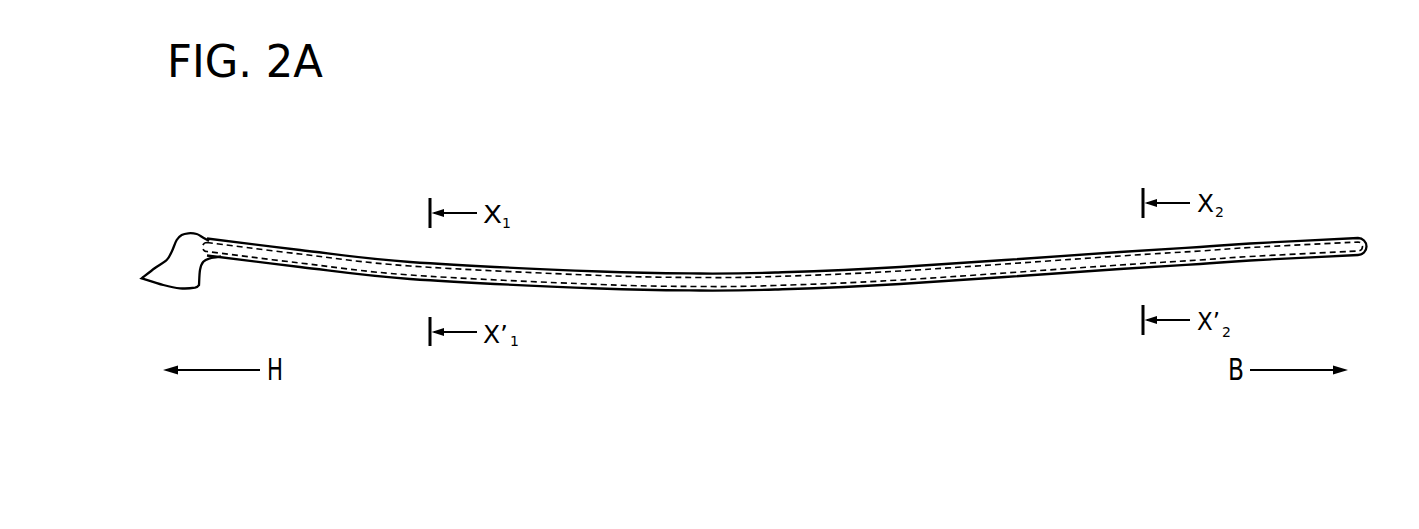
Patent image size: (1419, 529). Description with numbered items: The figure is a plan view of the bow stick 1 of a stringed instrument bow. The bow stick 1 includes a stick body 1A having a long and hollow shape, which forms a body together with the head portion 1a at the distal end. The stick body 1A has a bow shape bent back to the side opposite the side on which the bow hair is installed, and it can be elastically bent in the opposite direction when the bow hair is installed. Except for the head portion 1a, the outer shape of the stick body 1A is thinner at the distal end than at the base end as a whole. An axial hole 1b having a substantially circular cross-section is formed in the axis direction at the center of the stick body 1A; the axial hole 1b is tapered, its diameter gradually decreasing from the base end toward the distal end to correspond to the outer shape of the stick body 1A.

The bow stick 1 is at (324, 197).
The head portion 1a is at (167, 260).
The stick body 1A is at (772, 272).
The axial hole 1b is at (843, 282).